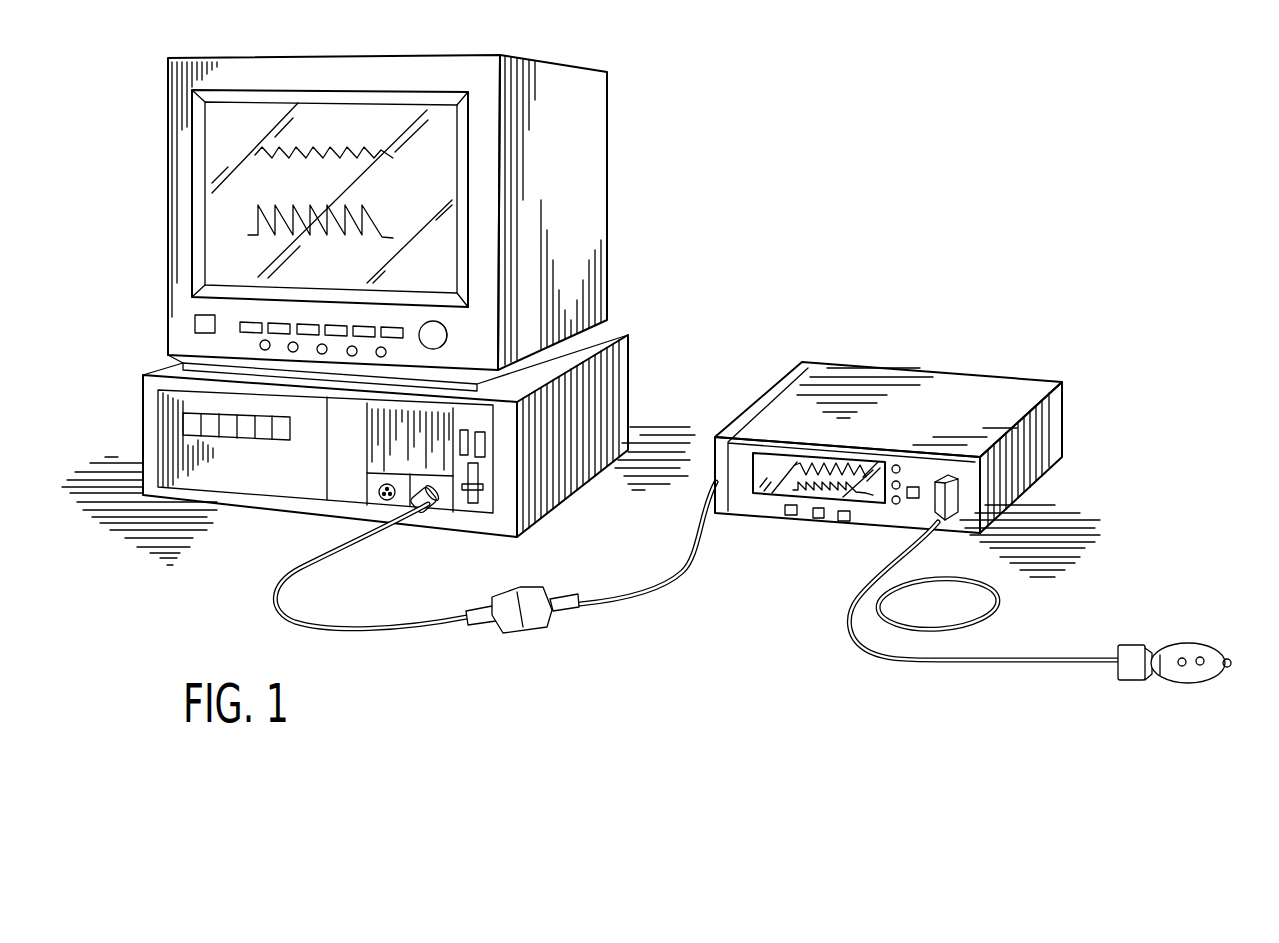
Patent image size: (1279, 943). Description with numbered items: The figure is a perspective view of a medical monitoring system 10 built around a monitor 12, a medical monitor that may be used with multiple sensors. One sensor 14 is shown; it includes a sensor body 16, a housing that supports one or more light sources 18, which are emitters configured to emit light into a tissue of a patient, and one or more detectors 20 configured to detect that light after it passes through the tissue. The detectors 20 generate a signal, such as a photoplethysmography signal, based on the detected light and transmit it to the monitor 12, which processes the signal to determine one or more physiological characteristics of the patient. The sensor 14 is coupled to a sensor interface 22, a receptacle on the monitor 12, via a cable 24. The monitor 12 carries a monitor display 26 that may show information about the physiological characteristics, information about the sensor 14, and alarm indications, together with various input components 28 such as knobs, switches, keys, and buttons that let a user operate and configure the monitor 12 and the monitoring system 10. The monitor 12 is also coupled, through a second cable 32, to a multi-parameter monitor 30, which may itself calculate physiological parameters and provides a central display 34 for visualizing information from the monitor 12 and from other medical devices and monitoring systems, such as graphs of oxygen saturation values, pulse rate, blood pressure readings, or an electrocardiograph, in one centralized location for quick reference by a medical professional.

The medical monitoring system 10 is at (967, 148).
The monitor 12 is at (979, 373).
The sensor 14 is at (1235, 648).
The sensor body 16 is at (1188, 643).
The light sources 18 is at (1180, 668).
The detectors 20 is at (1204, 668).
The sensor interface 22 is at (955, 520).
The cable 24 is at (878, 645).
The monitor display 26 is at (773, 493).
The input components 28 is at (908, 500).
The multi-parameter monitor 30 is at (553, 60).
The cable 32 is at (616, 603).
The central display 34 is at (216, 152).